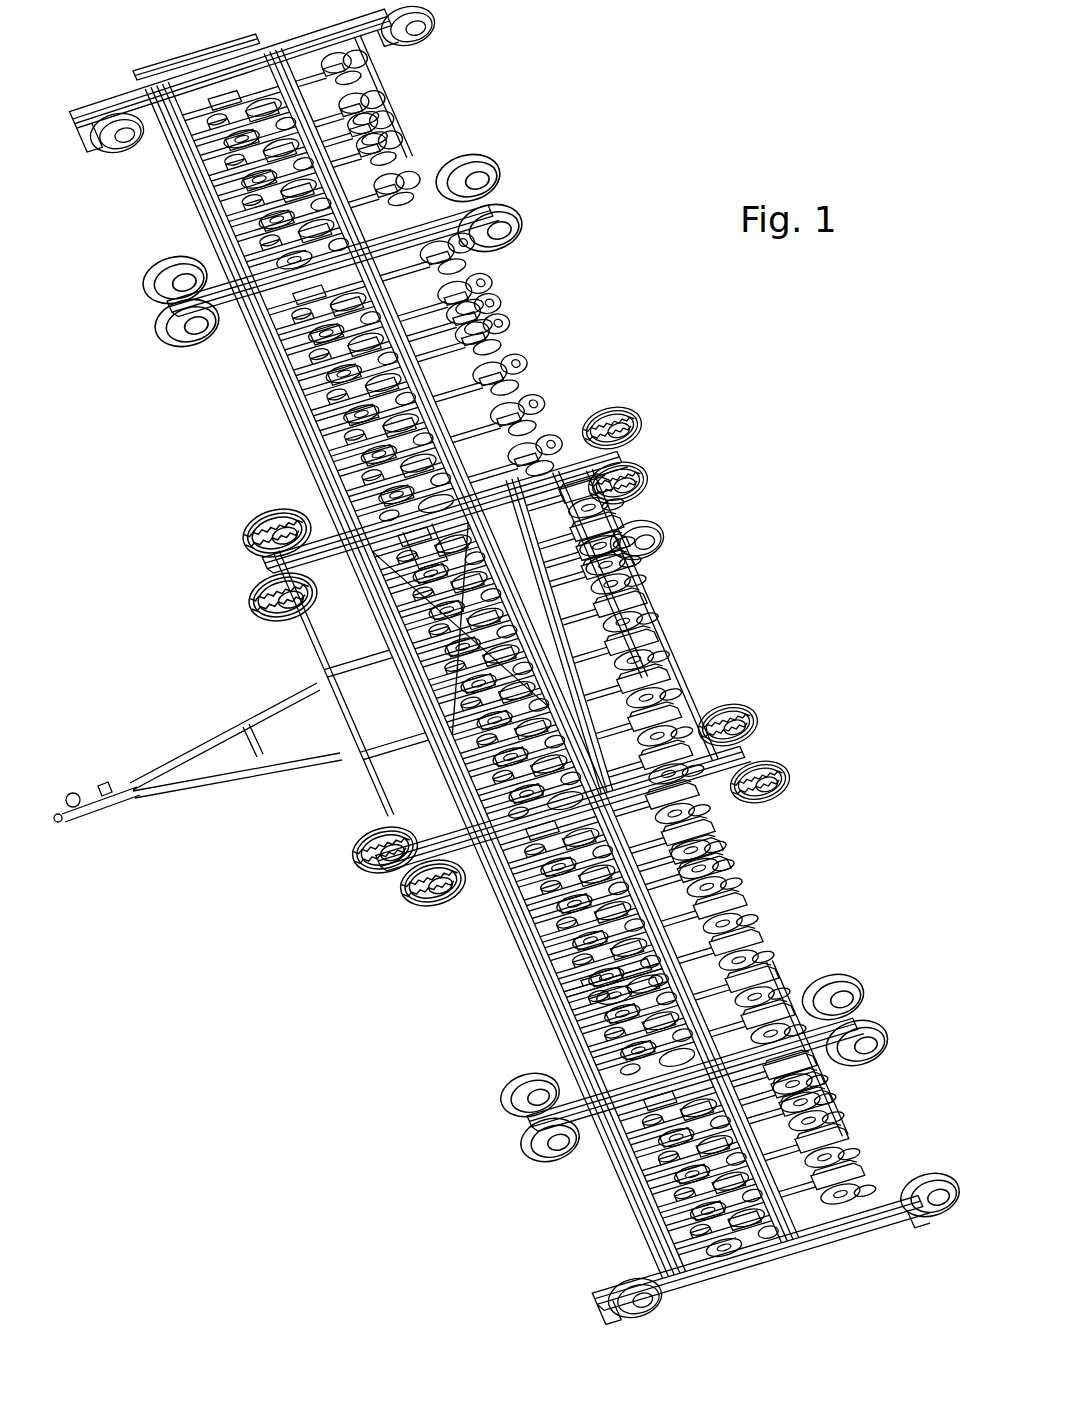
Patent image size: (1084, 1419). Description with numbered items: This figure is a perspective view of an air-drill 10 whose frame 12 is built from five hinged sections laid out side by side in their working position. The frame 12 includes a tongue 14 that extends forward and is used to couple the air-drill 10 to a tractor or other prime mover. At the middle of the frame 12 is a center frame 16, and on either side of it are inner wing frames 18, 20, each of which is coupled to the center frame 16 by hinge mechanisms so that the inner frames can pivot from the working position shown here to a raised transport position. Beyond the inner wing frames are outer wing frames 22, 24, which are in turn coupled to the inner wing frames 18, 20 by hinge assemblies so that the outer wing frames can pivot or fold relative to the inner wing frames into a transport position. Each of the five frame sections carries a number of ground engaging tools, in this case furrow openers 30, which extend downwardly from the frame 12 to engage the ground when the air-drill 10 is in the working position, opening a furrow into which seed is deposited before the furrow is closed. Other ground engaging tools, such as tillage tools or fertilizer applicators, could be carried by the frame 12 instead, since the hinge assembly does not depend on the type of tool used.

The air-drill 10 is at (776, 524).
The frame 12 is at (431, 657).
The tongue 14 is at (190, 787).
The center frame 16 is at (652, 614).
The inner wing frame 18 is at (290, 410).
The inner wing frame 20 is at (515, 937).
The outer wing frame 22 is at (180, 160).
The outer wing frame 24 is at (643, 1213).
The furrow openers 30 is at (410, 174).